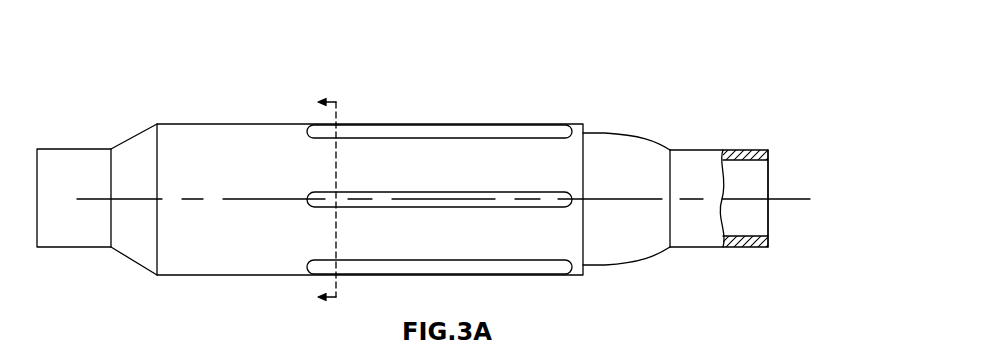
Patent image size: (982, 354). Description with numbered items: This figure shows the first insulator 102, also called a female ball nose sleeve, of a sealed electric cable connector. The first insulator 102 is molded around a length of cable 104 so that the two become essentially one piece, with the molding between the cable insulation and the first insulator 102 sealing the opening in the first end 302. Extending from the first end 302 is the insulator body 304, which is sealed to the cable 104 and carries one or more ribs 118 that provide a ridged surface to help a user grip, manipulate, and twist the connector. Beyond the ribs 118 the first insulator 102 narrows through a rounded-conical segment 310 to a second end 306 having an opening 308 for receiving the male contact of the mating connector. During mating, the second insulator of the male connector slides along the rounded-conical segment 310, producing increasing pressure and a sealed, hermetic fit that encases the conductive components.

The first insulator 102 is at (171, 79).
The cable 104 is at (57, 149).
The first end 302 is at (130, 260).
The insulator body 304 is at (235, 145).
The ribs 118 is at (481, 128).
The rounded-conical segment 310 is at (607, 147).
The second end 306 is at (685, 172).
The opening 308 is at (770, 178).